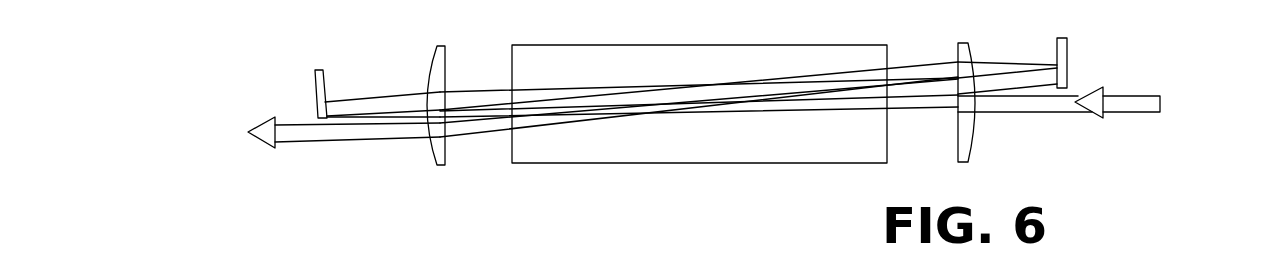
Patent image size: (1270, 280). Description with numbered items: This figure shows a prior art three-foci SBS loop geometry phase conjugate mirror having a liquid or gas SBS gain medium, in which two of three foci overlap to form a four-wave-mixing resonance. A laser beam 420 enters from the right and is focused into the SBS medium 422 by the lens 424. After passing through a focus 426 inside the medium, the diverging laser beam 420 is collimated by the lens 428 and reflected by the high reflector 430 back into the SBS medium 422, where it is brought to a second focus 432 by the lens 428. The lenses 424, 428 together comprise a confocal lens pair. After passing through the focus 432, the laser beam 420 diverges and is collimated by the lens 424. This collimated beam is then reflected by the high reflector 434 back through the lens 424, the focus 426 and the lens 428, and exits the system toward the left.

The laser beam 420 is at (1123, 96).
The SBS medium 422 is at (856, 45).
The lens 424 is at (966, 43).
The focus 426 is at (708, 107).
The lens 428 is at (432, 161).
The high reflector 430 is at (325, 69).
The focus 432 is at (703, 83).
The high reflector 434 is at (1064, 38).